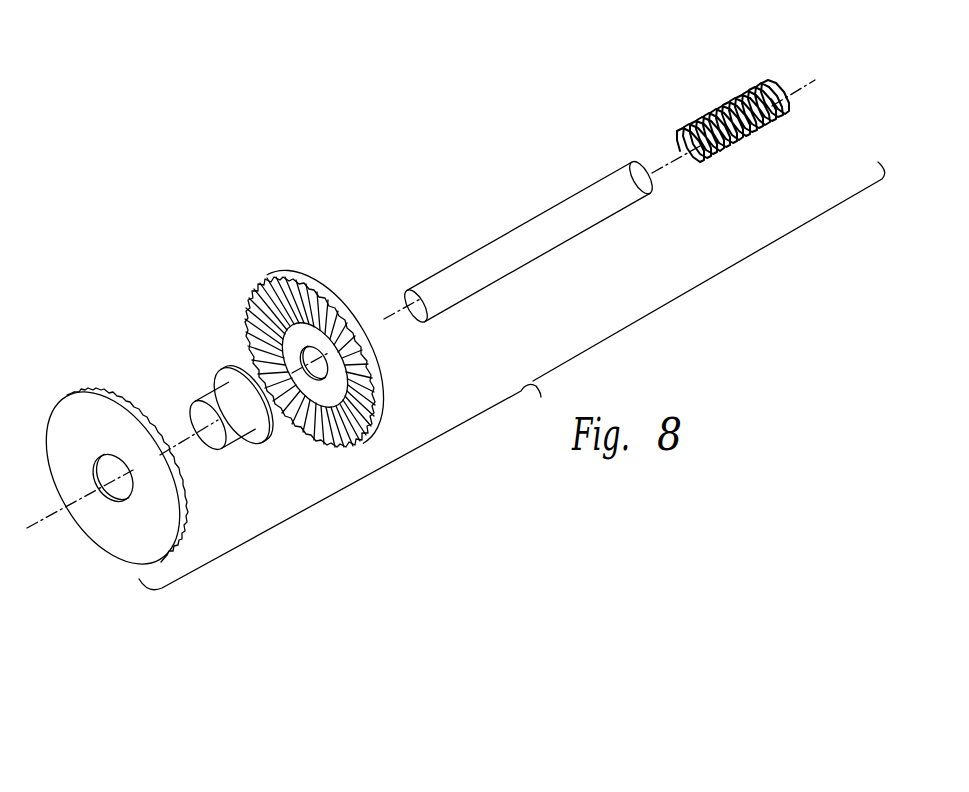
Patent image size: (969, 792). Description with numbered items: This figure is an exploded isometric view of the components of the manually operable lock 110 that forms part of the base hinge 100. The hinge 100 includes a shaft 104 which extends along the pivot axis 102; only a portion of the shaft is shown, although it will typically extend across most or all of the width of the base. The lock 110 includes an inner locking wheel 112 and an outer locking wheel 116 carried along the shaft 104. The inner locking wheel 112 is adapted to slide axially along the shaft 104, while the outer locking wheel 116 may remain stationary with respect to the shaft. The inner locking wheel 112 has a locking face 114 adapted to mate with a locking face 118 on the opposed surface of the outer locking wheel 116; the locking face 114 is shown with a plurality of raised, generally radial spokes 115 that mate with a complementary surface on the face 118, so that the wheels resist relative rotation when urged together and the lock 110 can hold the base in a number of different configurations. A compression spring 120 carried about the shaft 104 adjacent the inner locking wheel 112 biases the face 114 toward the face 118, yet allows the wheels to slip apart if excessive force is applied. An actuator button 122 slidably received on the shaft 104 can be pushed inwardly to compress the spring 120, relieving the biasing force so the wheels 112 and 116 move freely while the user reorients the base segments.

The base hinge 100 is at (163, 254).
The pivot axis 102 is at (50, 538).
The shaft 104 is at (575, 218).
The manually operable lock 110 is at (103, 470).
The inner locking wheel 112 is at (347, 335).
The locking face 114 is at (368, 387).
The raised radial spokes 115 is at (350, 306).
The outer locking wheel 116 is at (62, 427).
The locking face 118 is at (110, 390).
The compression spring 120 is at (738, 92).
The actuator button 122 is at (190, 410).